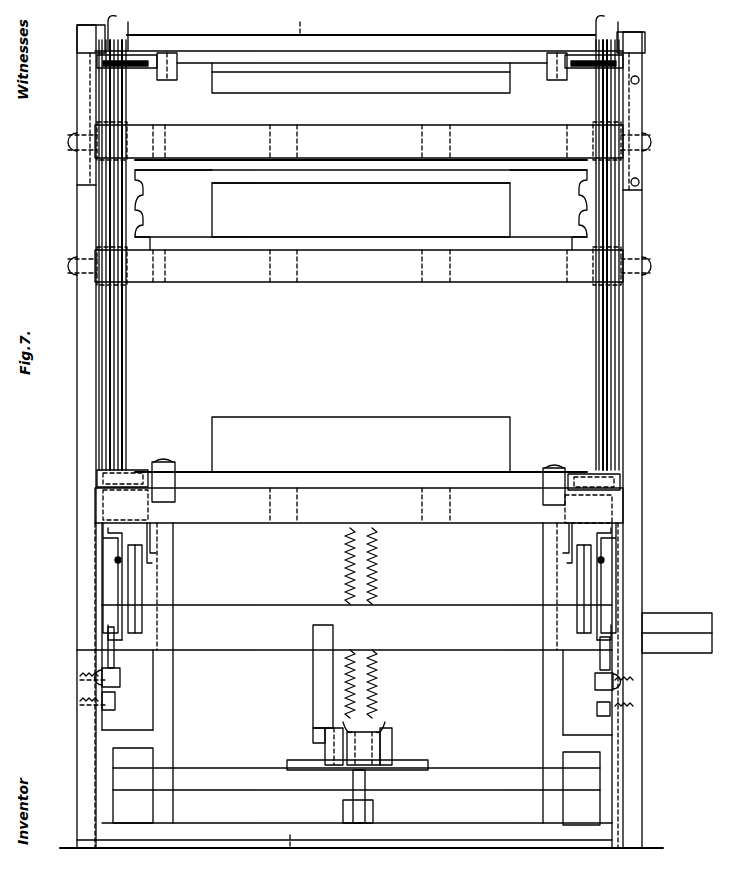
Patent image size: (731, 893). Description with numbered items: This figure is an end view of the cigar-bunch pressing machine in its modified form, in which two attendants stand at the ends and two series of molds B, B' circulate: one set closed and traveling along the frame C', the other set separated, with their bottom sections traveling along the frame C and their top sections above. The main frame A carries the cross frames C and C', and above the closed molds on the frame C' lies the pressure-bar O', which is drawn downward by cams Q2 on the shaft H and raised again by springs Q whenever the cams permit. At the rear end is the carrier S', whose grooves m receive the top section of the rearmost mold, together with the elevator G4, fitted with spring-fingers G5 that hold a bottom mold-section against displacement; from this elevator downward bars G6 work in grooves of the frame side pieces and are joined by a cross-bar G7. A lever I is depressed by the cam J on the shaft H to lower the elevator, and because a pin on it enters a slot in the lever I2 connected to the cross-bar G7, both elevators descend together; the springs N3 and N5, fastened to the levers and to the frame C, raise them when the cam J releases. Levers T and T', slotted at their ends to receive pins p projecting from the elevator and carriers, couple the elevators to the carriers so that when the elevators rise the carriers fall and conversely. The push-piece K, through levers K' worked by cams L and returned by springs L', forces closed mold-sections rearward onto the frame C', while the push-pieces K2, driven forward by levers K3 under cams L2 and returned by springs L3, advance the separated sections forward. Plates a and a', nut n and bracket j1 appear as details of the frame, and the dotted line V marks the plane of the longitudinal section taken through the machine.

The frame A is at (77, 330).
The mold B is at (361, 327).
The mold B' is at (361, 127).
The frame C is at (359, 505).
The frame C' is at (359, 266).
The pressure-bar O' is at (359, 141).
The carrier S' is at (359, 40).
The dotted line v v V is at (297, 440).
The push-piece K is at (361, 210).
The lever K' is at (359, 608).
The push-piece K2 is at (100, 421).
The lever K3 is at (96, 340).
The lever T is at (360, 255).
The lever T' is at (360, 255).
The plate a is at (358, 465).
The plate a' is at (362, 79).
The groove m is at (130, 68).
The nut n is at (167, 80).
The pin p is at (363, 29).
The elevator G4 is at (570, 566).
The spring-finger G5 is at (164, 462).
The bar G6 is at (186, 543).
The cross-bar G7 is at (357, 788).
The bracket j1 is at (357, 506).
The shaft H is at (394, 629).
The spring N3 is at (342, 623).
The spring N5 is at (384, 623).
The cam J is at (323, 676).
The lever I is at (318, 716).
The lever I2 is at (376, 726).
The spring Q is at (356, 694).
The cam Q2 is at (115, 664).
The cam L is at (359, 578).
The spring L' is at (380, 543).
The cam L2 is at (356, 589).
The spring L3 is at (115, 558).